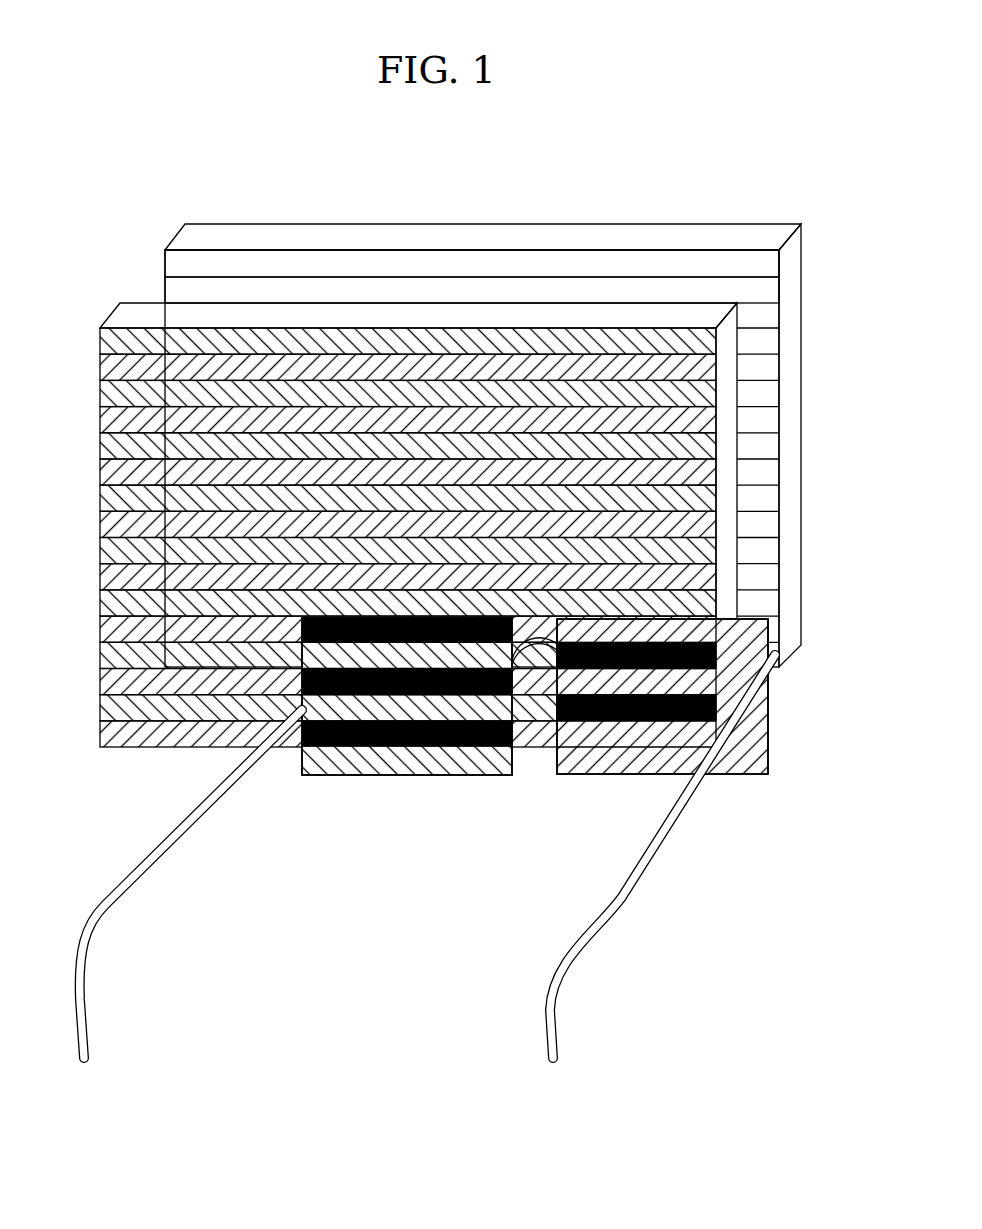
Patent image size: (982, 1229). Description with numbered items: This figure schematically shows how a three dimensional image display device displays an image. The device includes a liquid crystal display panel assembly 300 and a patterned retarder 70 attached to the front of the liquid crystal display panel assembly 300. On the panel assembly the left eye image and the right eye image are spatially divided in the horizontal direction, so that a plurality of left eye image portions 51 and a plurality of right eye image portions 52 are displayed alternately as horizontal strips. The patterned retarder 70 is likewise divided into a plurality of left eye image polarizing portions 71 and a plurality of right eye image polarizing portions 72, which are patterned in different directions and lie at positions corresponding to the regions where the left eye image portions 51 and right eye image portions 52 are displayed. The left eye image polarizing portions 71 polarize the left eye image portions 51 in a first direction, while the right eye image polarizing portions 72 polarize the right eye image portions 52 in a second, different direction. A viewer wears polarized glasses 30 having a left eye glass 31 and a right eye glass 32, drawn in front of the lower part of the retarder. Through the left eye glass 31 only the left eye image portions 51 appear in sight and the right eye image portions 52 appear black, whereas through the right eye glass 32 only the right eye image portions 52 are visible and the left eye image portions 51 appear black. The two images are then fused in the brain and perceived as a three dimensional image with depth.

The liquid crystal display panel assembly 300 is at (479, 408).
The left eye image portions 51 is at (722, 262).
The right eye image portions 52 is at (656, 290).
The patterned retarder 70 is at (387, 486).
The left eye image polarizing portions 71 is at (110, 657).
The right eye image polarizing portions 72 is at (110, 680).
The left eye glass 31 is at (345, 775).
The right eye glass 32 is at (591, 775).
The polarized glasses 30 is at (612, 900).